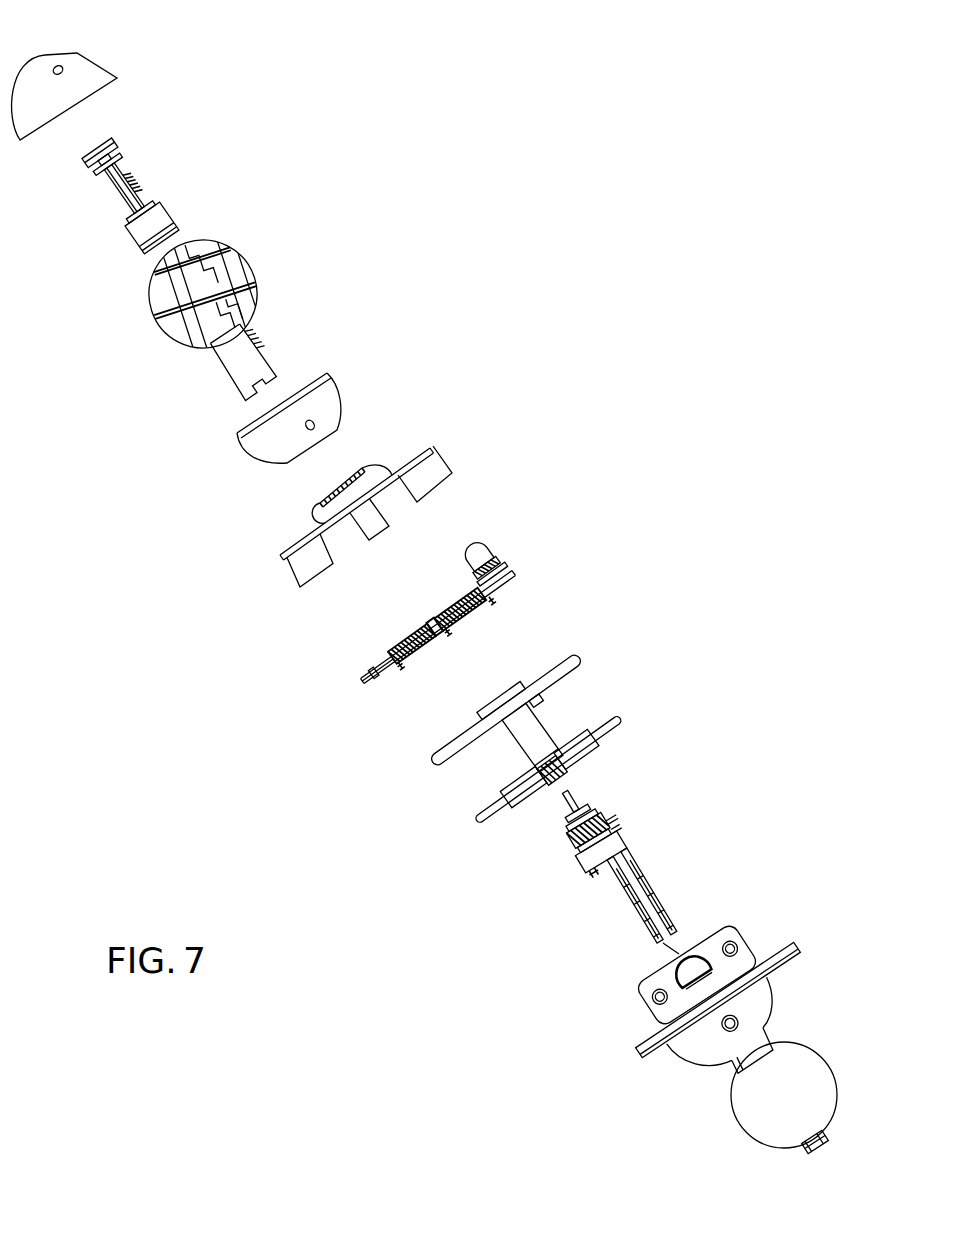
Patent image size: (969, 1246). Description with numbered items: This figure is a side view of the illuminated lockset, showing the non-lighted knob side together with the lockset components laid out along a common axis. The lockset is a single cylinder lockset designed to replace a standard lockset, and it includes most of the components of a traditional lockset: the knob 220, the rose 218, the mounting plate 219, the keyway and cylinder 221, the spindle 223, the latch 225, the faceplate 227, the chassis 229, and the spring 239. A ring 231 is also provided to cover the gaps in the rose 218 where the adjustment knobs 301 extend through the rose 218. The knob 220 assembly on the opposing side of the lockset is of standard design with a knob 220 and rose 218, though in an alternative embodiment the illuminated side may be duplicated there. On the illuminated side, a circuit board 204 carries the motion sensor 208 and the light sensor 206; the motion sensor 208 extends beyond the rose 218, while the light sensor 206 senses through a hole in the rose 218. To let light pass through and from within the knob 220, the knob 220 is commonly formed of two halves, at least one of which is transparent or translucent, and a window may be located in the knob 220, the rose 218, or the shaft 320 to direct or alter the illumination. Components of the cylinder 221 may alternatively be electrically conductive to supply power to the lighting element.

The knob 220 is at (77, 53).
The keyway and cylinder 221 is at (173, 210).
The shaft 320 is at (225, 375).
The rose 218 is at (280, 567).
The circuit board 204 is at (370, 673).
The light sensor 206 is at (440, 618).
The adjustment knobs 301 is at (457, 603).
The motion sensor 208 is at (490, 546).
The mounting plate 219 is at (575, 660).
The ring 231 is at (480, 823).
The spring 239 is at (597, 820).
The chassis 229 is at (582, 873).
The spindle 223 is at (650, 895).
The faceplate 227 is at (637, 987).
The latch 225 is at (695, 967).